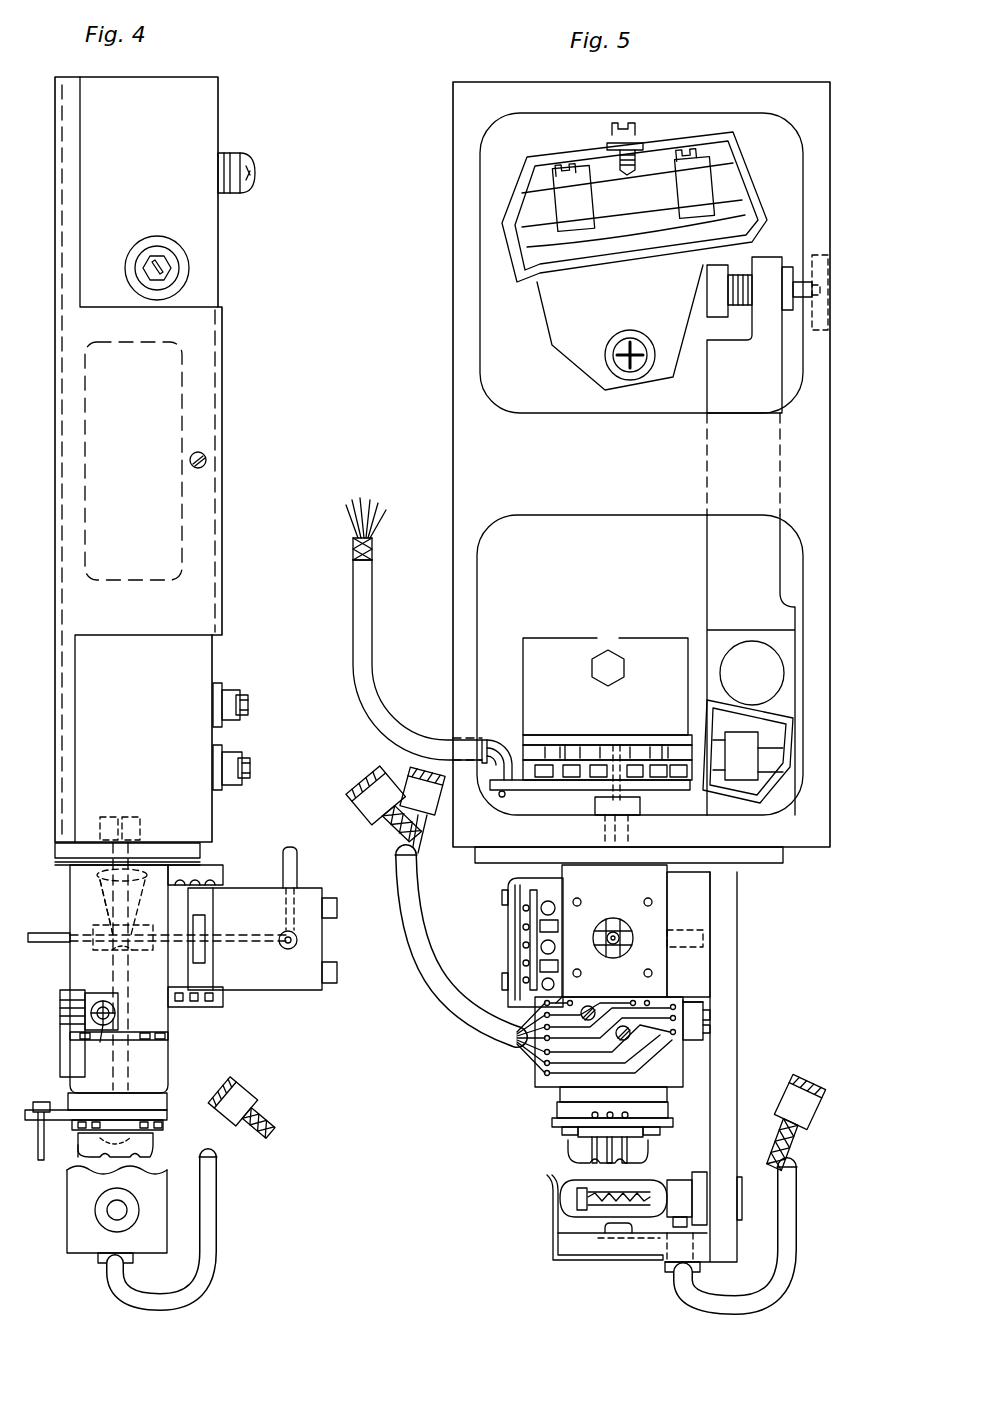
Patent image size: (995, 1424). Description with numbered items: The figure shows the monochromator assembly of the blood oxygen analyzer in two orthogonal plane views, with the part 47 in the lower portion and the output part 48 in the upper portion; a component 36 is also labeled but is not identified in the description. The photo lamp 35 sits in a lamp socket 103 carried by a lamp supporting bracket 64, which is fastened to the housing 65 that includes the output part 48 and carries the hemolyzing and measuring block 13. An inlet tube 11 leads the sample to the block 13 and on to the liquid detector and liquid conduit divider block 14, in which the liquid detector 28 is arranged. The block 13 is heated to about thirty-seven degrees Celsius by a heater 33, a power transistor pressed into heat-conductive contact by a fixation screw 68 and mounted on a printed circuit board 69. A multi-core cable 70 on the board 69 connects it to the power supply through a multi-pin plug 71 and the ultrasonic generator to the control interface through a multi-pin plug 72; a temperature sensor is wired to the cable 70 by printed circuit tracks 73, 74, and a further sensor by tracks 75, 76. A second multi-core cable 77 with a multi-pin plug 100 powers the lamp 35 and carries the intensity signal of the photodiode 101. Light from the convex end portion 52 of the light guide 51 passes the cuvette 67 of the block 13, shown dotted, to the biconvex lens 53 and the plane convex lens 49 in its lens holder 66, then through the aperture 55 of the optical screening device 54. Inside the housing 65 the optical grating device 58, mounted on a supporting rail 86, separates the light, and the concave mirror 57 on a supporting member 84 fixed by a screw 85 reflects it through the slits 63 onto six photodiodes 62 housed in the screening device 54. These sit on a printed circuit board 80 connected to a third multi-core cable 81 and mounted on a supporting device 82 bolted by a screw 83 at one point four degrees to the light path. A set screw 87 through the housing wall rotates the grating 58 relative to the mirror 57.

In FIG. 4, the inlet tube 11 is at (60, 938).
In FIG. 4, the hemolyzing and measuring block 13 is at (165, 1025).
In FIG. 5, the hemolyzing and measuring block 13 is at (657, 900).
In FIG. 4, the liquid detector and liquid conduit divider block 14 is at (252, 888).
In FIG. 4, the liquid detector 28 is at (205, 952).
In FIG. 4, the heater 33 is at (118, 1003).
In FIG. 5, the heater 33 is at (703, 1003).
In FIG. 5, the photo lamp 35 is at (560, 1210).
In FIG. 5, the housing 36 is at (450, 198).
In FIG. 4, the part 47 is at (185, 1090).
In FIG. 5, the part 47 is at (545, 1100).
In FIG. 4, the output part 48 is at (222, 412).
In FIG. 5, the output part 48 is at (495, 303).
In FIG. 4, the plane convex lens 49 is at (140, 1142).
In FIG. 4, the light guide 51 is at (130, 1058).
In FIG. 4, the convex end portion 52 is at (115, 957).
In FIG. 4, the biconvex lens 53 is at (100, 878).
In FIG. 5, the optical screening device 54 is at (528, 750).
In FIG. 5, the aperture 55 is at (617, 745).
In FIG. 5, the concave mirror 57 is at (733, 190).
In FIG. 5, the optical grating device 58 is at (743, 722).
In FIG. 5, the photodiodes 62 is at (565, 745).
In FIG. 5, the slits 63 is at (660, 745).
In FIG. 4, the lamp supporting bracket 64 is at (83, 1243).
In FIG. 5, the lamp supporting bracket 64 is at (725, 1063).
In FIG. 4, the housing 65 is at (213, 578).
In FIG. 5, the housing 65 is at (818, 820).
In FIG. 4, the lens holder 66 is at (78, 1150).
In FIG. 5, the lens holder 66 is at (570, 1152).
In FIG. 4, the cuvette 67 is at (118, 928).
In FIG. 5, the cuvette 67 is at (614, 930).
In FIG. 4, the fixation screw 68 is at (103, 1044).
In FIG. 5, the fixation screw 68 is at (710, 1022).
In FIG. 5, the printed circuit board 69 is at (660, 1005).
In FIG. 5, the multi-core cable 70 is at (445, 1010).
In FIG. 5, the multi-pin plug 71 is at (365, 800).
In FIG. 5, the multi-pin plug 72 is at (412, 775).
In FIG. 5, the printed circuit track 73 is at (532, 1065).
In FIG. 5, the printed circuit track 74 is at (545, 1075).
In FIG. 5, the printed circuit track 75 is at (565, 998).
In FIG. 5, the printed circuit track 76 is at (520, 1010).
In FIG. 4, the second multi-core cable 77 is at (200, 1237).
In FIG. 5, the second multi-core cable 77 is at (780, 1232).
In FIG. 5, the printed circuit board 80 is at (522, 790).
In FIG. 5, the third multi-core cable 81 is at (352, 605).
In FIG. 5, the supporting device 82 is at (550, 640).
In FIG. 5, the screw 83 is at (608, 650).
In FIG. 5, the supporting member 84 is at (555, 322).
In FIG. 5, the screw 85 is at (615, 364).
In FIG. 5, the supporting rail 86 is at (775, 462).
In FIG. 4, the set screw 87 is at (175, 272).
In FIG. 5, the set screw 87 is at (820, 290).
In FIG. 4, the multi-pin plug 100 is at (256, 1115).
In FIG. 5, the multi-pin plug 100 is at (815, 1080).
In FIG. 5, the photodiode 101 is at (618, 1233).
In FIG. 5, the lamp socket 103 is at (680, 1180).